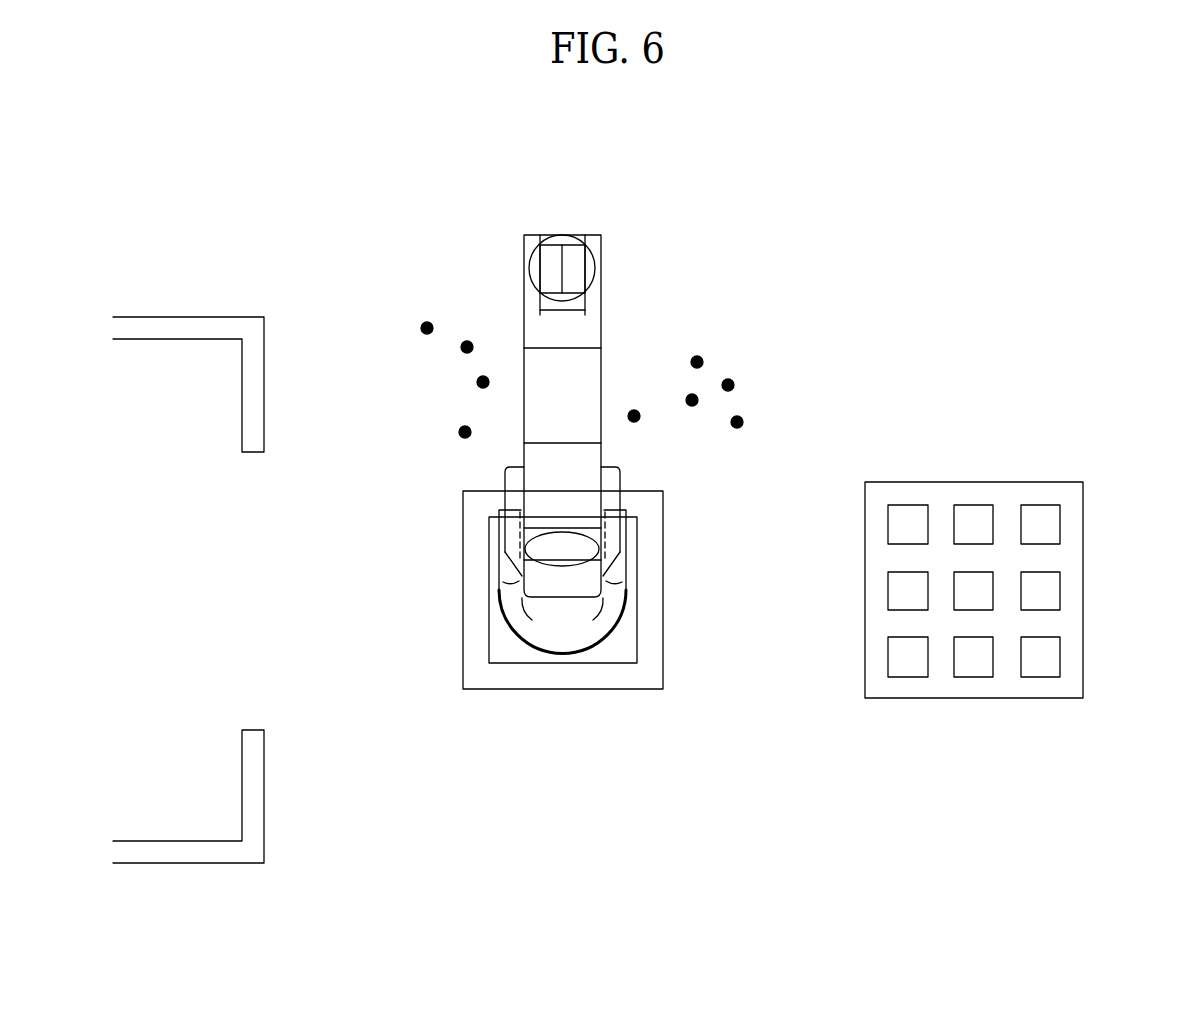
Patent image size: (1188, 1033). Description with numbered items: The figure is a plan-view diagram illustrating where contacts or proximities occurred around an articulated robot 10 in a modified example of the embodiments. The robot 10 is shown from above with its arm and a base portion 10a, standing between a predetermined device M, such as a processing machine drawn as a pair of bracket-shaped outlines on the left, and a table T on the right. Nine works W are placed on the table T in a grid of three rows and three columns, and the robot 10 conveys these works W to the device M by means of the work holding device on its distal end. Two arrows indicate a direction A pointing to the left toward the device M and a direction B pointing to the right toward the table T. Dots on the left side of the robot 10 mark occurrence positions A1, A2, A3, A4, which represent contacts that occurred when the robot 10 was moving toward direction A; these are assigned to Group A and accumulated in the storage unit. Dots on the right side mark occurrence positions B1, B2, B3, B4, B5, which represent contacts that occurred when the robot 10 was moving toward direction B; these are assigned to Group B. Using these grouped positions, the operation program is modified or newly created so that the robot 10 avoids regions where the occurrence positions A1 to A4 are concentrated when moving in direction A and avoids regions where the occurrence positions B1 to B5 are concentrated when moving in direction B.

The articulated robot 10 is at (597, 228).
The hand base 10a is at (562, 693).
The direction A is at (512, 273).
The direction B is at (613, 273).
The occurrence position A1 is at (461, 348).
The occurrence position A2 is at (477, 383).
The occurrence position A3 is at (421, 328).
The occurrence position A4 is at (459, 433).
The occurrence position B1 is at (702, 358).
The occurrence position B2 is at (735, 384).
The occurrence position B3 is at (693, 406).
The occurrence position B4 is at (633, 409).
The occurrence position B5 is at (745, 423).
The predetermined device M is at (195, 317).
The table T is at (1020, 482).
The work W is at (904, 505).